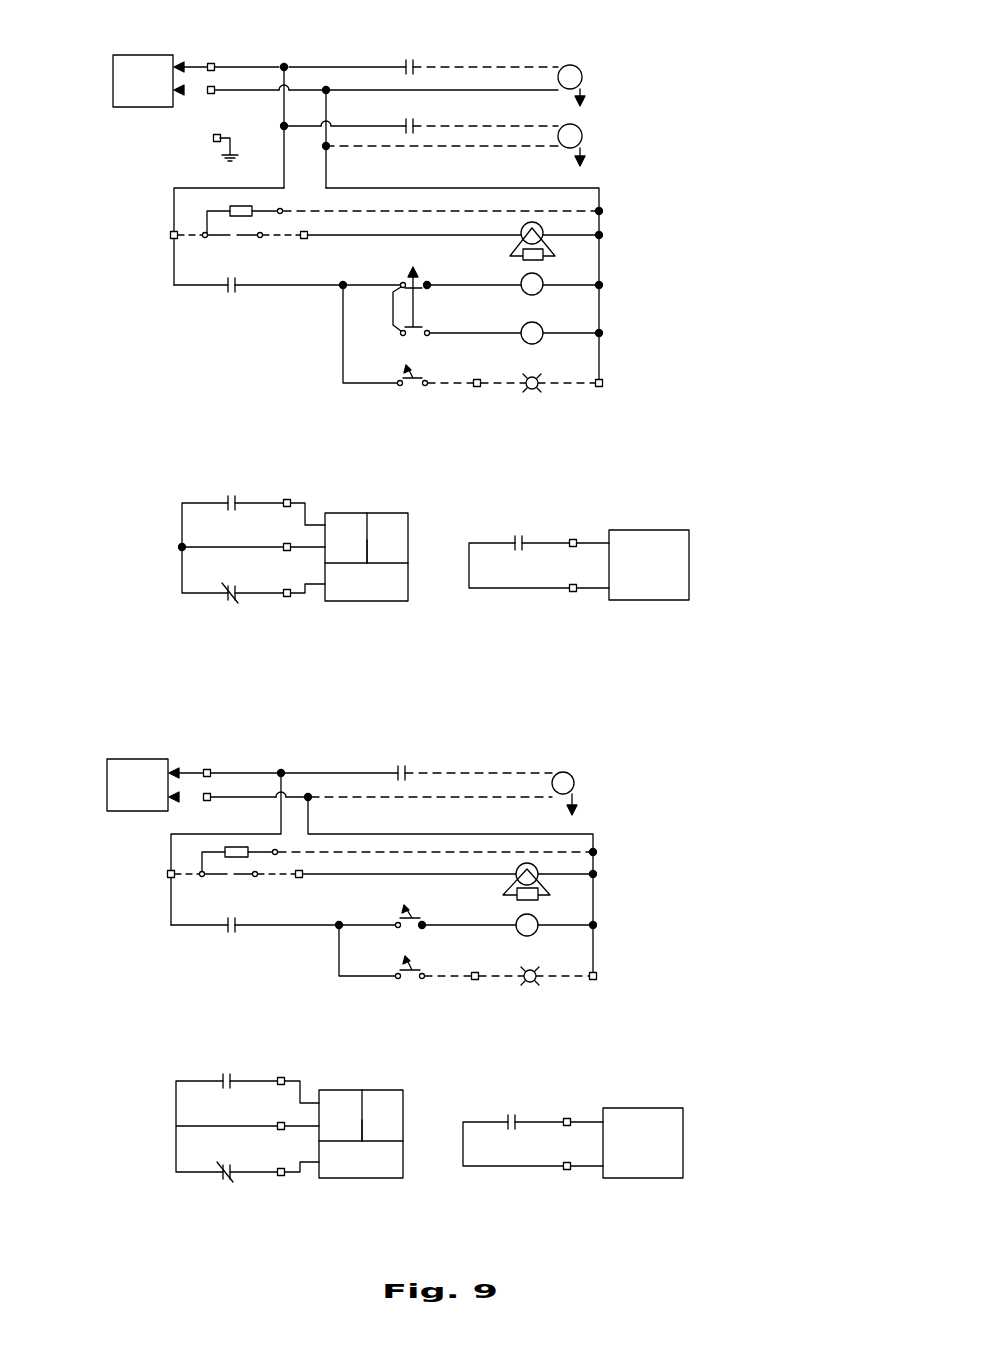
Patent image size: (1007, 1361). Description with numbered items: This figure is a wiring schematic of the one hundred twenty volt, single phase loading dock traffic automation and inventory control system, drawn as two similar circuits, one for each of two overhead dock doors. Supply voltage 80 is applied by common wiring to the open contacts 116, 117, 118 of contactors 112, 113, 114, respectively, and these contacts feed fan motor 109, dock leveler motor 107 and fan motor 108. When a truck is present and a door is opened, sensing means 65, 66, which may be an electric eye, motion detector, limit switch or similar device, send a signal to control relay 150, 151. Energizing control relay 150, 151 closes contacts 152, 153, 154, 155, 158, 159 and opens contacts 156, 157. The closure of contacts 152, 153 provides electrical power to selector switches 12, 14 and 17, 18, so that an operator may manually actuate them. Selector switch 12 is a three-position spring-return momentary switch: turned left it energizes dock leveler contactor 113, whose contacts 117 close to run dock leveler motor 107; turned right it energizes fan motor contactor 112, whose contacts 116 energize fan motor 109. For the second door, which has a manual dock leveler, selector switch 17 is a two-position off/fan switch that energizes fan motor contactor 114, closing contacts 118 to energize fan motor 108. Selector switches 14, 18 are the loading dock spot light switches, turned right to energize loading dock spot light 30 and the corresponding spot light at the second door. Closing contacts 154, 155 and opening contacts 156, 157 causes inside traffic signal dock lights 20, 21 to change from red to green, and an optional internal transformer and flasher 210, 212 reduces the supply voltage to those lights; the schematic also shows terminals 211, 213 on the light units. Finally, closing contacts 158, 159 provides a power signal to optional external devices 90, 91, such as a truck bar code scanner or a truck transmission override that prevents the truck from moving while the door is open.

The supply voltage 80 is at (122, 72).
The open contacts 116 is at (410, 58).
The open contacts 117 is at (412, 124).
The open contacts 118 is at (405, 760).
The fan motor 109 is at (585, 77).
The dock leveler motor 107 is at (582, 134).
The fan motor 108 is at (575, 778).
The sensing means 65 is at (207, 222).
The sensing means 66 is at (213, 862).
The control relay 150 is at (545, 222).
The control relay 151 is at (540, 868).
The fan motor contactor 112 is at (545, 280).
The dock leveler contactor 113 is at (545, 330).
The fan motor contactor 114 is at (540, 918).
The contacts 152 is at (230, 292).
The contacts 153 is at (232, 930).
The selector switch 12 is at (372, 325).
The selector switch 14 is at (410, 395).
The selector switch 17 is at (402, 933).
The selector switch 18 is at (412, 990).
The loading dock spot light 30 is at (532, 390).
The inside traffic signal dock light 21 is at (388, 1152).
The contacts 154 is at (230, 495).
The contacts 155 is at (224, 1073).
The contacts 156 is at (230, 580).
The contacts 157 is at (228, 1160).
The contacts 158 is at (518, 533).
The contacts 159 is at (512, 1105).
The internal transformer and flasher 210 is at (350, 535).
The motor terminal 211 is at (392, 545).
The internal transformer and flasher 212 is at (343, 1115).
The motor terminal 213 is at (385, 1125).
The inside traffic signal dock light 20 is at (388, 575).
The truck control notification automation system 90 is at (670, 567).
The truck control notification automation system 91 is at (663, 1145).